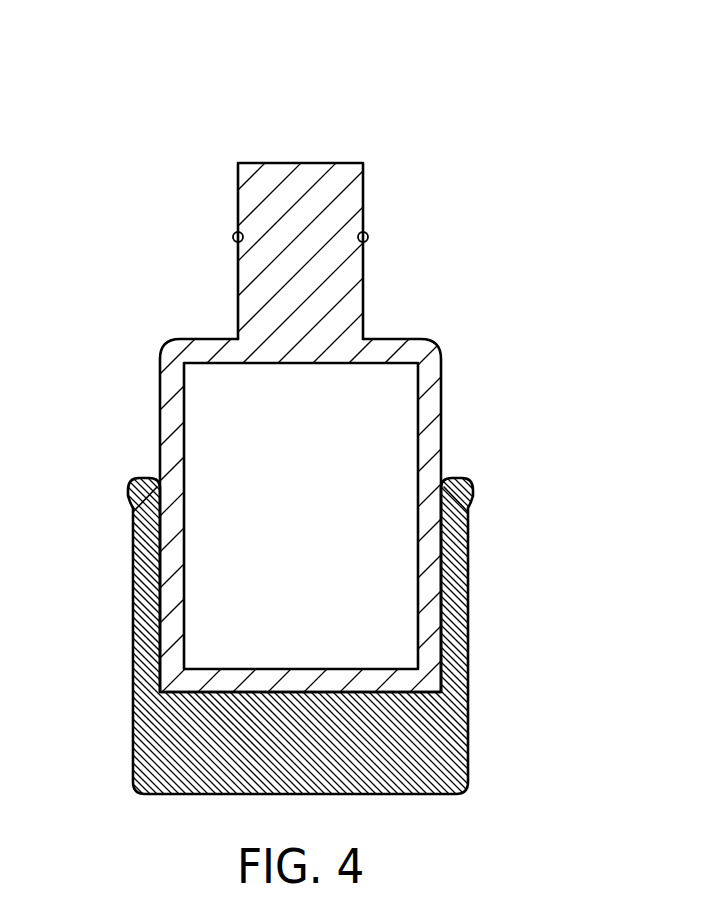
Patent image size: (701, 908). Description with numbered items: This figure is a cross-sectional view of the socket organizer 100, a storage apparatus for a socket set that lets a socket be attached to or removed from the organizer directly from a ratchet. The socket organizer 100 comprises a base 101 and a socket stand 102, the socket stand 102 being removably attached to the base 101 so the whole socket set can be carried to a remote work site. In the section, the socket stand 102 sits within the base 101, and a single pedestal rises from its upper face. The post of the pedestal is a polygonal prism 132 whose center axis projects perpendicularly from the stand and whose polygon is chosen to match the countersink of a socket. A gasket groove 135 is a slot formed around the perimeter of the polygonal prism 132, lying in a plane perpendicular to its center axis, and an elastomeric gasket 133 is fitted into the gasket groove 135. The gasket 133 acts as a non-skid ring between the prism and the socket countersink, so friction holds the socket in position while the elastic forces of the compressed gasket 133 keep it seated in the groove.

The socket organizer 100 is at (122, 128).
The base 101 is at (460, 562).
The socket stand 102 is at (433, 398).
The polygonal prism 132 is at (295, 163).
The gasket 133 is at (369, 237).
The gasket groove 135 is at (360, 235).